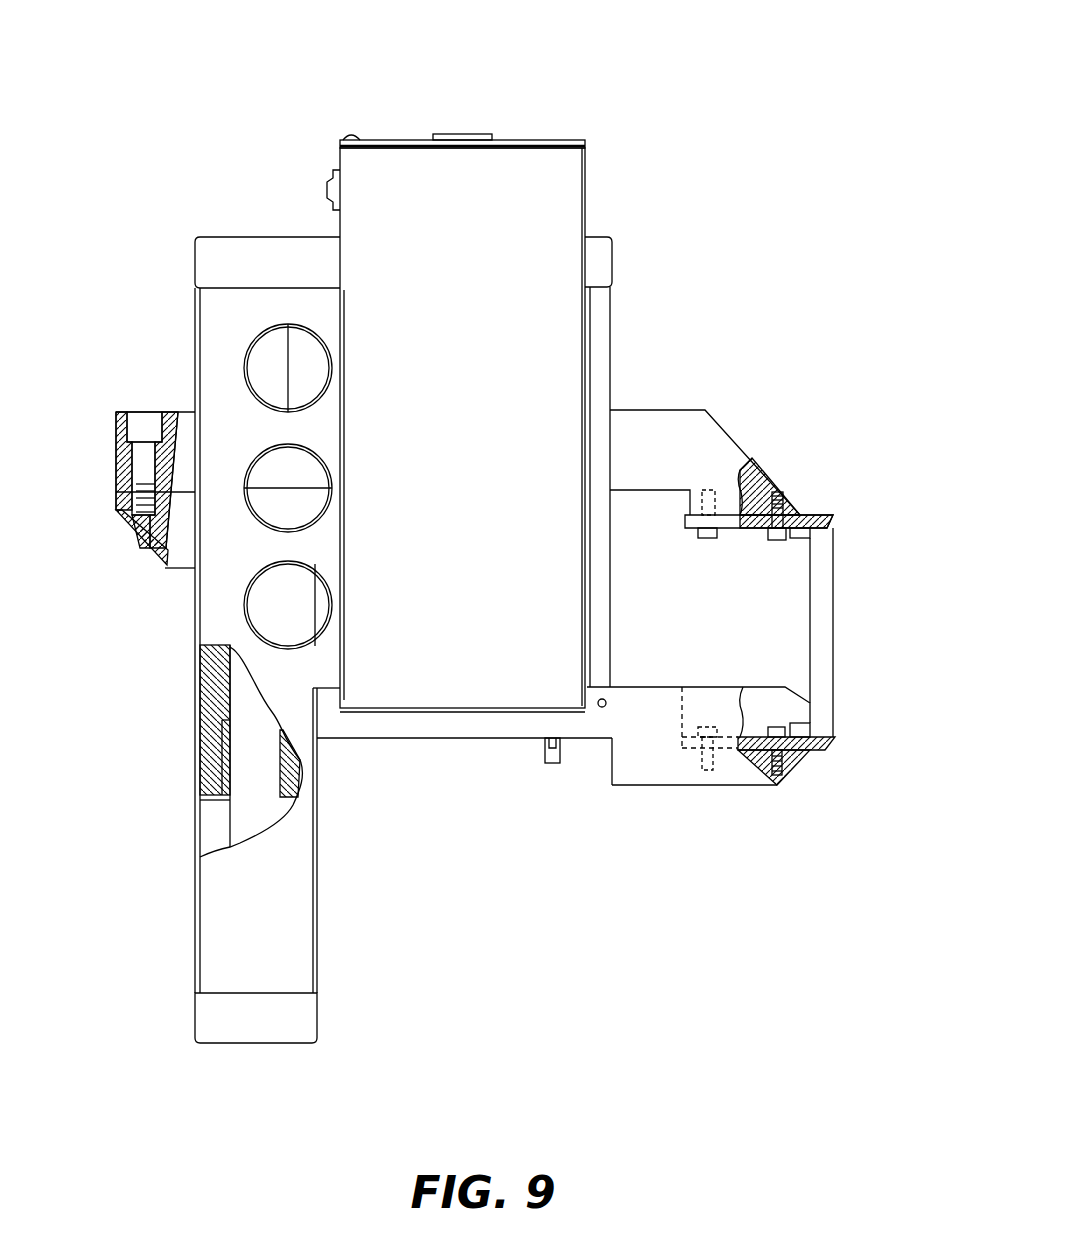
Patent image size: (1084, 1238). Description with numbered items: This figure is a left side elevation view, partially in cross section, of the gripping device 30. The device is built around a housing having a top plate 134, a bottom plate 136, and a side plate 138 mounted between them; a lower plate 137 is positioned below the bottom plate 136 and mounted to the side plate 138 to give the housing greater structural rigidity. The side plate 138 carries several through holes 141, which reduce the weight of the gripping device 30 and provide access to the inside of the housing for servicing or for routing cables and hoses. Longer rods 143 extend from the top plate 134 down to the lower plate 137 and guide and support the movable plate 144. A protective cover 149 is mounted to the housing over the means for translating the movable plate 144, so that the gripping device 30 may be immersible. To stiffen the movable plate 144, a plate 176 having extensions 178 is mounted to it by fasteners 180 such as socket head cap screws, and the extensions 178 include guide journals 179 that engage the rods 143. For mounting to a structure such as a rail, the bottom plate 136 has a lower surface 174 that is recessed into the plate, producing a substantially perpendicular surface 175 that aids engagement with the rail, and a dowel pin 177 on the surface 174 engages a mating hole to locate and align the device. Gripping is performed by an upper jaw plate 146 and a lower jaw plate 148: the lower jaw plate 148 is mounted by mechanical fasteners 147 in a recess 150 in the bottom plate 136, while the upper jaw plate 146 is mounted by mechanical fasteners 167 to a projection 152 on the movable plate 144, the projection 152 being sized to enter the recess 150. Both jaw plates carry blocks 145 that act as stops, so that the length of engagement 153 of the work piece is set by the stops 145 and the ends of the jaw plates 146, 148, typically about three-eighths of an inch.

The gripping device 30 is at (634, 88).
The protective cover 149 is at (390, 142).
The top plate 134 is at (200, 263).
The side plate 138 is at (237, 921).
The lower plate 137 is at (197, 1018).
The through holes 141 is at (272, 408).
The extensions 178 is at (213, 672).
The guide journals 179 is at (225, 757).
The rods 143 is at (248, 703).
The fasteners 180 is at (133, 427).
The movable plate 144 is at (127, 470).
The plate having extensions 176 is at (175, 556).
The lower surface of bottom plate 174 is at (460, 741).
The dowel pin 177 is at (550, 766).
The surface 175 is at (612, 760).
The bottom plate 136 is at (630, 788).
The recess 150 is at (686, 716).
The mechanical fasteners 147 is at (707, 758).
The lower jaw plate 148 is at (828, 752).
The blocks 145 is at (796, 540).
The upper jaw plate 146 is at (832, 526).
The projection 152 is at (728, 512).
The mechanical fasteners 167 is at (778, 511).
The length of engagement 153 is at (765, 628).